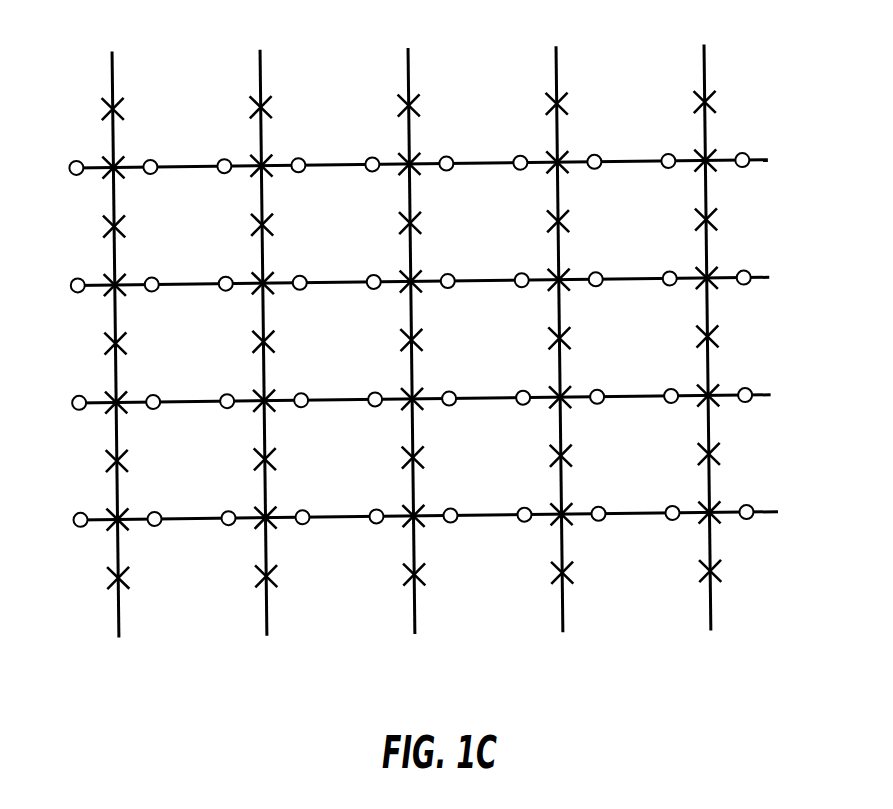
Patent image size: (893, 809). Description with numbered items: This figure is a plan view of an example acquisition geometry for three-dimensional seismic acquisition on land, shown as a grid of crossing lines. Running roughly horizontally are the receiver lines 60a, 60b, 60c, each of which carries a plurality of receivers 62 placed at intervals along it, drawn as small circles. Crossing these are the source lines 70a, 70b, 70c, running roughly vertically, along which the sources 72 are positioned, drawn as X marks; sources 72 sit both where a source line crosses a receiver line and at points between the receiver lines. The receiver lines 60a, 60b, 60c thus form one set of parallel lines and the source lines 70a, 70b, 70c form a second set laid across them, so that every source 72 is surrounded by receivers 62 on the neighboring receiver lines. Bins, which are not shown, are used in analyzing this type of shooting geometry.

The receiver line 60a is at (768, 160).
The receiver line 60b is at (768, 278).
The receiver line 60c is at (768, 395).
The source line 70a is at (119, 637).
The source line 70b is at (267, 636).
The source line 70c is at (415, 634).
The source 72 is at (106, 162).
The receiver 62 is at (667, 152).